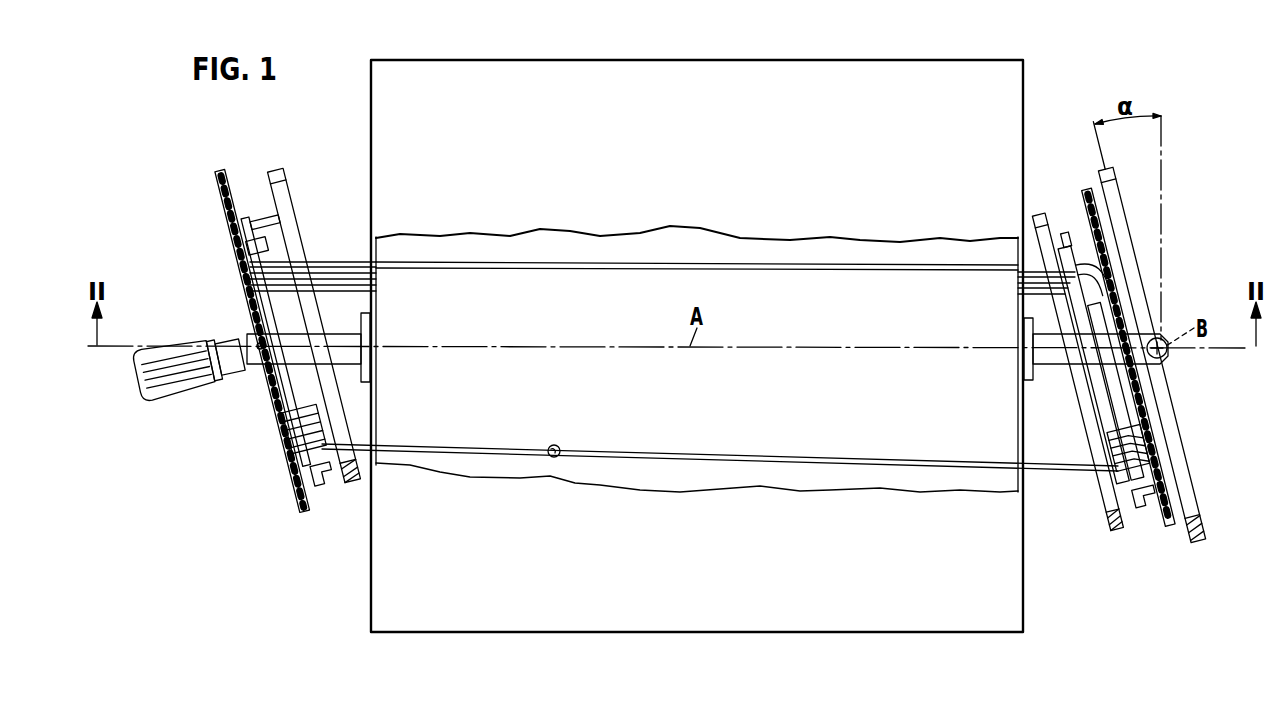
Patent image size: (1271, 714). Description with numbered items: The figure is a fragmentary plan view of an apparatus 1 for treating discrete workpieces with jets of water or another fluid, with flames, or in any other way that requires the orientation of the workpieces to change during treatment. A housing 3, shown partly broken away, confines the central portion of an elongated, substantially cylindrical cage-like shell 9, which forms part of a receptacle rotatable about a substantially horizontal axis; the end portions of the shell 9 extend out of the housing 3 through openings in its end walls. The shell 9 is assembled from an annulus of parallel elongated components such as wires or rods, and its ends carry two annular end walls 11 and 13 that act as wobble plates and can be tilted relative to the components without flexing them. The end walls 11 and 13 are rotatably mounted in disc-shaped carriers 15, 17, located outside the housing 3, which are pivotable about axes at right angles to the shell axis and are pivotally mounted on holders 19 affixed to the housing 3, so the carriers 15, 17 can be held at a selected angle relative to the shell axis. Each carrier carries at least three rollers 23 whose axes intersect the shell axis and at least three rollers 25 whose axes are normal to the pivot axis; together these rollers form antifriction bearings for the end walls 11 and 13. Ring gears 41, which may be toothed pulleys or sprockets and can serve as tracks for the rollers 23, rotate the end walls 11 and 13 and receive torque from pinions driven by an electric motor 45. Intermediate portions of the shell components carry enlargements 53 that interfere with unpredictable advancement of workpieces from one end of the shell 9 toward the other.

The apparatus 1 is at (745, 163).
The housing 3 is at (1024, 616).
The shell 9 is at (581, 265).
The end wall 11 is at (1130, 418).
The end wall 13 is at (282, 437).
The carrier 15 is at (1117, 533).
The carrier 17 is at (358, 489).
The holder 19 is at (270, 380).
The roller 23 is at (1150, 475).
The roller 25 is at (1067, 237).
The ring gear 41 is at (297, 492).
The electric motor 45 is at (150, 402).
The enlargement 53 is at (557, 445).